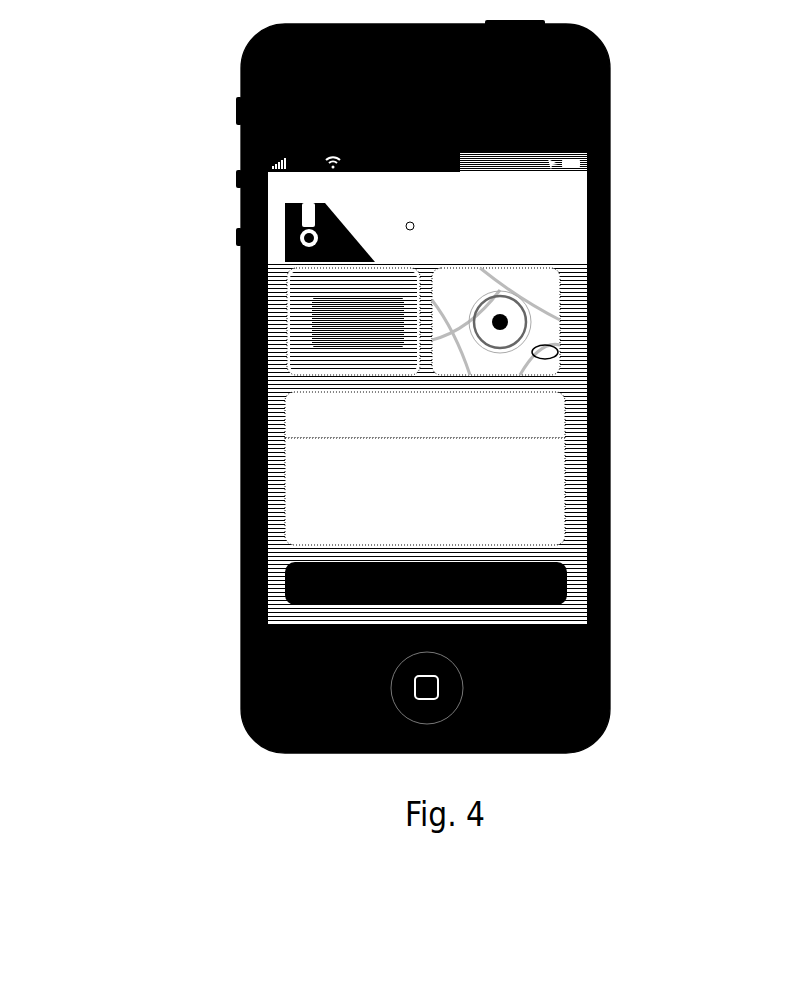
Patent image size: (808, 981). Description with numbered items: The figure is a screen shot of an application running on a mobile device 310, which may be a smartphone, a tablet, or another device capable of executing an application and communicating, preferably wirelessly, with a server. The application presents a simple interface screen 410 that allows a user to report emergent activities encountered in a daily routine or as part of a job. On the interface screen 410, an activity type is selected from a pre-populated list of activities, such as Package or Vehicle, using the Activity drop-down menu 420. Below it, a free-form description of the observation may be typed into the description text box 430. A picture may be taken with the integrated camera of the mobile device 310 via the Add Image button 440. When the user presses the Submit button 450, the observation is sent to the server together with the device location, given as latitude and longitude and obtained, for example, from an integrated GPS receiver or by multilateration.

The mobile device 310 is at (688, 88).
The interface screen 410 is at (567, 208).
The Activity drop-down menu 420 is at (545, 418).
The description text box 430 is at (545, 483).
The Add Image button 440 is at (290, 307).
The Submit button 450 is at (310, 580).